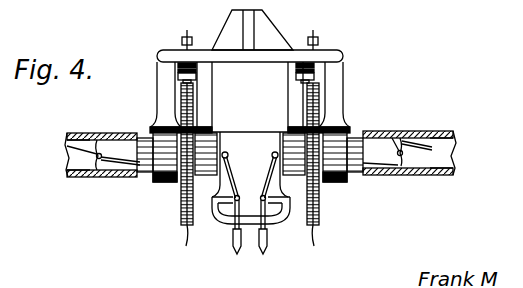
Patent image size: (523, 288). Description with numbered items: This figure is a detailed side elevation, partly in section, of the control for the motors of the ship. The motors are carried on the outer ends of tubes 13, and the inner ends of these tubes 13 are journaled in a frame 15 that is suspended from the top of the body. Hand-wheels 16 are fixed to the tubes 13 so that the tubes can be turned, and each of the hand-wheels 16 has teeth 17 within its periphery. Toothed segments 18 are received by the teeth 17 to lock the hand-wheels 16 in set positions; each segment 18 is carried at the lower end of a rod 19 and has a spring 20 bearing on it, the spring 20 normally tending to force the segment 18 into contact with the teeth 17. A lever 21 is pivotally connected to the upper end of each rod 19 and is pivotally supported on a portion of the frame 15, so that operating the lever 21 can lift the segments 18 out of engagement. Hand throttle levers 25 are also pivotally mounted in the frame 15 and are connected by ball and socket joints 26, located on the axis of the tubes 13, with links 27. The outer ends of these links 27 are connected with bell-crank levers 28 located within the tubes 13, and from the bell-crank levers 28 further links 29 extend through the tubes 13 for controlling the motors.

The tubes 13 is at (140, 178).
The frame 15 is at (277, 37).
The hand-wheels 16 is at (181, 222).
The teeth 17 is at (187, 240).
The toothed segments 18 is at (300, 80).
The rod 19 is at (176, 72).
The spring 20 is at (315, 66).
The lever 21 is at (180, 40).
The hand throttle levers 25 is at (258, 262).
The ball and socket joints 26 is at (228, 153).
The links 27 is at (106, 168).
The bell-crank levers 28 is at (140, 137).
The links 29 is at (85, 134).